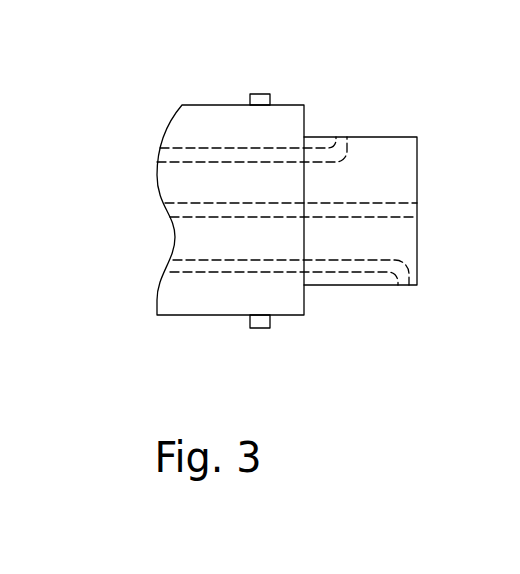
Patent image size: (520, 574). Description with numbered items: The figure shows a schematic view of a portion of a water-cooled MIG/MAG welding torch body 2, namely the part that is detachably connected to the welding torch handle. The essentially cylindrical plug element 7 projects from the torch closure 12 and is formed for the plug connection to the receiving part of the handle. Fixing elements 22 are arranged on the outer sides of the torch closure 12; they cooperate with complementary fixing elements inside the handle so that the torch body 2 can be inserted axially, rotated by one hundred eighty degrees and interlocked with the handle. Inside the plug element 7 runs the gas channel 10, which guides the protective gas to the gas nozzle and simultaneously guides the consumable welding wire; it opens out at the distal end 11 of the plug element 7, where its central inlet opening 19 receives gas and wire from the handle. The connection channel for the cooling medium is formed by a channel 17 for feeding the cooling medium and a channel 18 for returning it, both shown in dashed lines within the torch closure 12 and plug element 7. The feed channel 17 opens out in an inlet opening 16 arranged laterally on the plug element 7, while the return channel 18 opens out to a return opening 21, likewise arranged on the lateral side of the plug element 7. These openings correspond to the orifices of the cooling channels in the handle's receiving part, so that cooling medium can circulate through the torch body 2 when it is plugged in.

The MIG/MAG welding torch body 2 is at (144, 352).
The plug element 7 is at (319, 123).
The gas channel 10 is at (230, 209).
The distal end 11 is at (433, 288).
The torch closure 12 is at (198, 123).
The inlet opening 16 is at (351, 123).
The channel for feeding the cooling medium 17 is at (190, 152).
The channel for returning the cooling medium 18 is at (347, 268).
The central inlet opening 19 is at (430, 221).
The return opening 21 is at (409, 298).
The fixing elements 22 is at (262, 98).